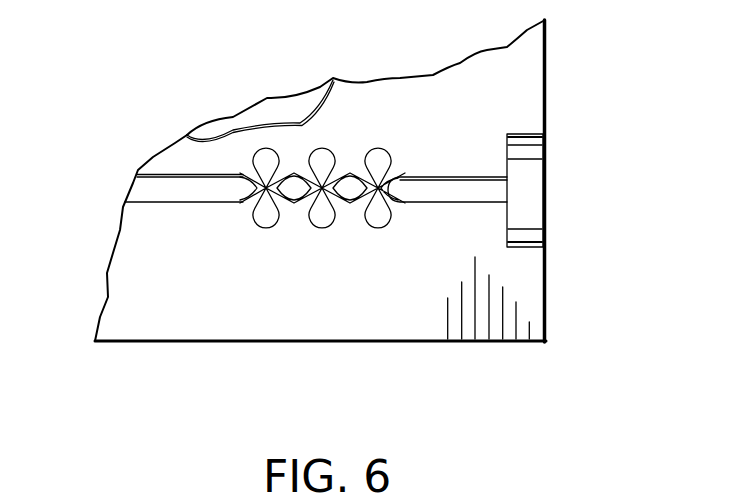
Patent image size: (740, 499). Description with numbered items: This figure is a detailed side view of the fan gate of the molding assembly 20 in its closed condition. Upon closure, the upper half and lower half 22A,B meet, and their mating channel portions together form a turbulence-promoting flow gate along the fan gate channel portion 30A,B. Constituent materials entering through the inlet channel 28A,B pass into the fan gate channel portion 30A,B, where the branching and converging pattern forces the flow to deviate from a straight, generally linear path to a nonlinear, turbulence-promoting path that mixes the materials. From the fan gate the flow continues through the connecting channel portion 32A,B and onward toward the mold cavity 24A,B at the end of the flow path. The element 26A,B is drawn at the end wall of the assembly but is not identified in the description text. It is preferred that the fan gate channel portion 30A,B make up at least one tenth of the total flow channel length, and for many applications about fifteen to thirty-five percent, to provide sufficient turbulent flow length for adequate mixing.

The molding assembly 20 is at (572, 377).
The upper half and lower half 22A,B is at (547, 48).
The mold cavity 24A,B is at (187, 135).
The end block 26A,B is at (528, 208).
The inlet channel 28A,B is at (443, 190).
The fan gate channel portion 30A,B is at (390, 157).
The connecting channel portion 32A,B is at (163, 190).